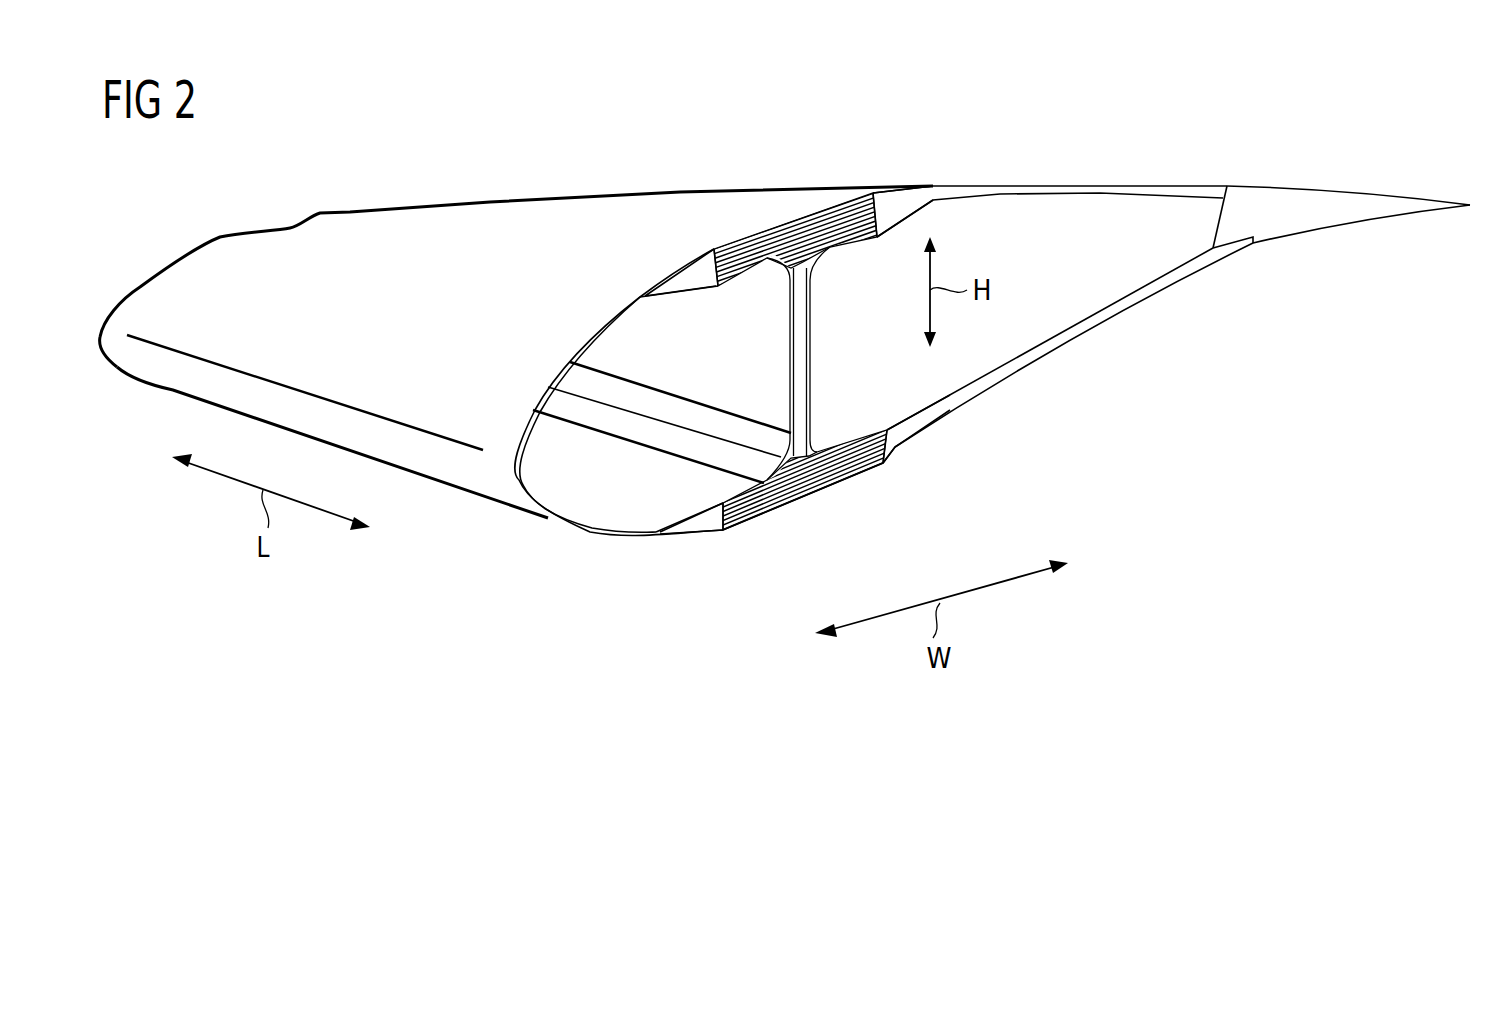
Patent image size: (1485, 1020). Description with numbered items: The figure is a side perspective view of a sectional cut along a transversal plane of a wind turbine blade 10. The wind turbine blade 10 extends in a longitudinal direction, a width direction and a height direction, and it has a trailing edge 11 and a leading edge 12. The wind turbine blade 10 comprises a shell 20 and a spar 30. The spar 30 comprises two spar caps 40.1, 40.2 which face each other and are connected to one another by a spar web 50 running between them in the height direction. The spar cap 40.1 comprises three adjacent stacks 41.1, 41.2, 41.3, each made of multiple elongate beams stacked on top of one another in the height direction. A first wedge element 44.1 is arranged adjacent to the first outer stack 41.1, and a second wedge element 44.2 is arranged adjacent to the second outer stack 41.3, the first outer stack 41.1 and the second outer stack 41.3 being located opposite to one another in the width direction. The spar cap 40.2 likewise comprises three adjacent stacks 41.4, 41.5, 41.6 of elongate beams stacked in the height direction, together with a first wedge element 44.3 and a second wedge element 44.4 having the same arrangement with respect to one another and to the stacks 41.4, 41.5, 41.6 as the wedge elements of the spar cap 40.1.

The wind turbine blade 10 is at (483, 186).
The trailing edge 11 is at (1372, 236).
The leading edge 12 is at (503, 527).
The shell 20 is at (1163, 184).
The spar 30 is at (812, 335).
The spar cap 40.1 is at (792, 195).
The spar cap 40.2 is at (832, 501).
The first outer stack 41.1 is at (743, 250).
The stack 41.2 is at (805, 227).
The second outer stack 41.3 is at (857, 213).
The stack 41.4 is at (757, 505).
The stack 41.5 is at (810, 487).
The stack 41.6 is at (870, 457).
The first wedge element 44.1 is at (693, 275).
The second wedge element 44.2 is at (907, 200).
The first wedge element 44.3 is at (690, 528).
The second wedge element 44.4 is at (917, 430).
The shear web 50 is at (792, 373).